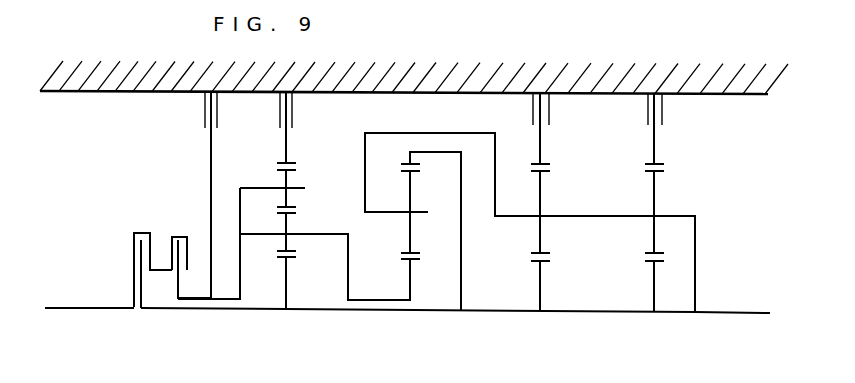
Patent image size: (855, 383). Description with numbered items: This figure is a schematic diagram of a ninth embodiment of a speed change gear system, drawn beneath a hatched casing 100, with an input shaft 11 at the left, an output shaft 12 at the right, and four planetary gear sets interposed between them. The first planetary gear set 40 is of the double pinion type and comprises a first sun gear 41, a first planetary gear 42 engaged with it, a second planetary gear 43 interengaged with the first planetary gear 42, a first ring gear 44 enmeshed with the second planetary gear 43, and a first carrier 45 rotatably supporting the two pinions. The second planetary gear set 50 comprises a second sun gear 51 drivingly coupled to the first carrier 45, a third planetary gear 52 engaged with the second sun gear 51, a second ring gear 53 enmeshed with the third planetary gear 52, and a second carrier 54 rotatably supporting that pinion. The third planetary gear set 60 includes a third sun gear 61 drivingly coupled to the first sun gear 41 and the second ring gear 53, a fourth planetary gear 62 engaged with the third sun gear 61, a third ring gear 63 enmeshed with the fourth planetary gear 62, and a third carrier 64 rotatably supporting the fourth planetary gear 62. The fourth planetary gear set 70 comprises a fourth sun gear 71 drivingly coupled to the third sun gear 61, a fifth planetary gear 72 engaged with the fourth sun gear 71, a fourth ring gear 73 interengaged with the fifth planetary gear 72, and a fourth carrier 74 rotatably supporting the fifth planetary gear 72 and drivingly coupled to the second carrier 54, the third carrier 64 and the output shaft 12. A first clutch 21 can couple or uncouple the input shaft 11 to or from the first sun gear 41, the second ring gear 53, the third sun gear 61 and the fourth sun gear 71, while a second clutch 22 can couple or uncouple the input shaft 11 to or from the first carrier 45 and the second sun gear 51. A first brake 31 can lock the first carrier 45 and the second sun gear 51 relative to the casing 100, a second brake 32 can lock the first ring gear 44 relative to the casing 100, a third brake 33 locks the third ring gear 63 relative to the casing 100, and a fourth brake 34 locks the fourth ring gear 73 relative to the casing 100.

The casing 100 is at (428, 90).
The input shaft 11 is at (72, 308).
The output shaft 12 is at (735, 313).
The first clutch 21 is at (138, 230).
The second clutch 22 is at (184, 234).
The first brake 31 is at (205, 103).
The second brake 32 is at (281, 102).
The third brake 33 is at (549, 102).
The fourth brake 34 is at (662, 103).
The first planetary gear set 40 is at (293, 275).
The first sun gear 41 is at (286, 282).
The first planetary gear 42 is at (286, 240).
The second planetary gear 43 is at (286, 197).
The first ring gear 44 is at (286, 143).
The first carrier 45 is at (241, 229).
The second planetary gear set 50 is at (416, 282).
The second sun gear 51 is at (412, 273).
The third planetary gear 52 is at (410, 232).
The second ring gear 53 is at (412, 155).
The second carrier 54 is at (430, 174).
The third planetary gear set 60 is at (544, 290).
The third sun gear 61 is at (540, 272).
The fourth planetary gear 62 is at (540, 233).
The third ring gear 63 is at (540, 135).
The third carrier 64 is at (547, 174).
The fourth planetary gear set 70 is at (646, 290).
The fourth sun gear 71 is at (654, 272).
The fifth planetary gear 72 is at (654, 233).
The fourth ring gear 73 is at (654, 145).
The fourth carrier 74 is at (647, 249).